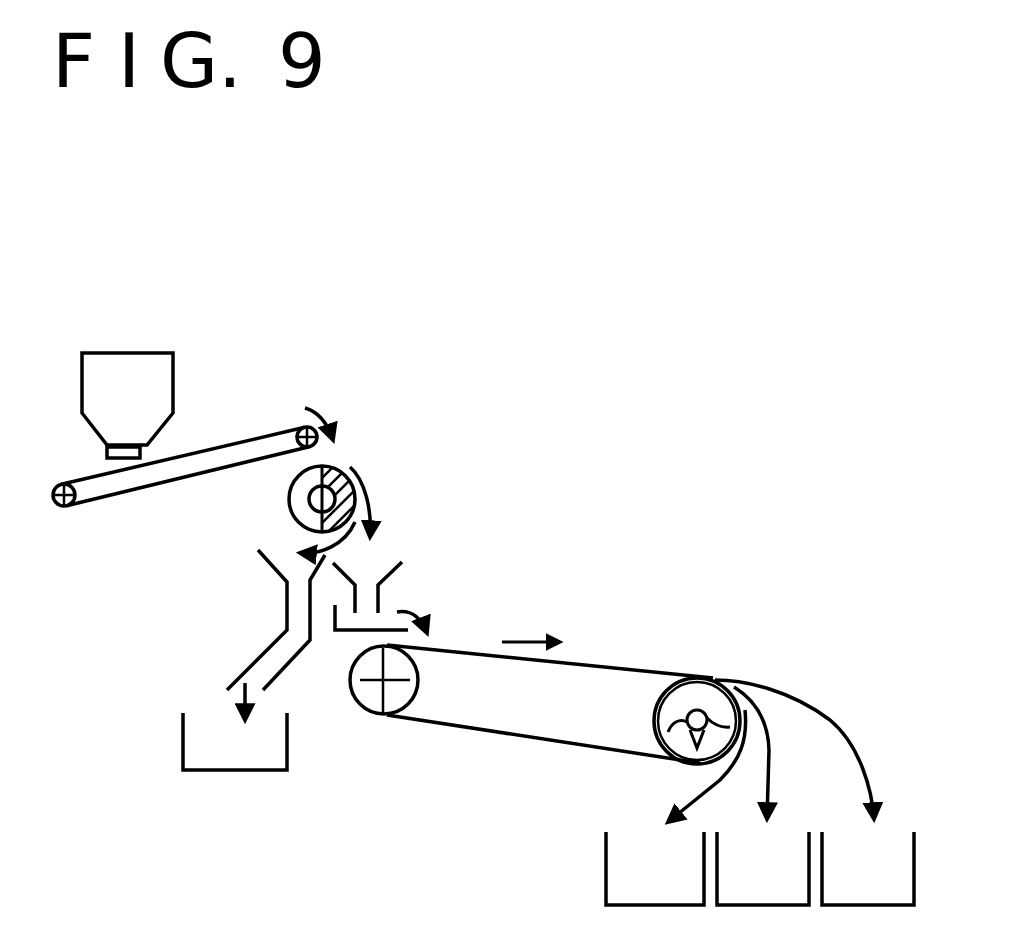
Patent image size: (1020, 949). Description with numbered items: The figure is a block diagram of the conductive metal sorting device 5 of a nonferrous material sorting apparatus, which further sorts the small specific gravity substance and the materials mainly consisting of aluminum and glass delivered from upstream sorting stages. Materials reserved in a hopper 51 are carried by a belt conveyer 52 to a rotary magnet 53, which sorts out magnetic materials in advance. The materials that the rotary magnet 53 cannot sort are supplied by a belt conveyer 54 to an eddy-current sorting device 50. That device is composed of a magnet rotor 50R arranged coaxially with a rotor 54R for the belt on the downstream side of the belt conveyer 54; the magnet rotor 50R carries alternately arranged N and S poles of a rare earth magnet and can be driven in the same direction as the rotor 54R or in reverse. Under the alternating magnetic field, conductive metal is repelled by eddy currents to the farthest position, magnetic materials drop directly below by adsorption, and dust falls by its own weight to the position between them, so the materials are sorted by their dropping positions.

The conductive metal sorting device 5 is at (602, 438).
The eddy-current sorting device 50 is at (760, 614).
The magnet rotor 50R is at (655, 731).
The hopper 51 is at (140, 382).
The belt conveyer 52 is at (227, 450).
The rotary magnet 53 is at (390, 473).
The belt conveyer 54 is at (472, 652).
The rotor for belt 54R is at (707, 676).